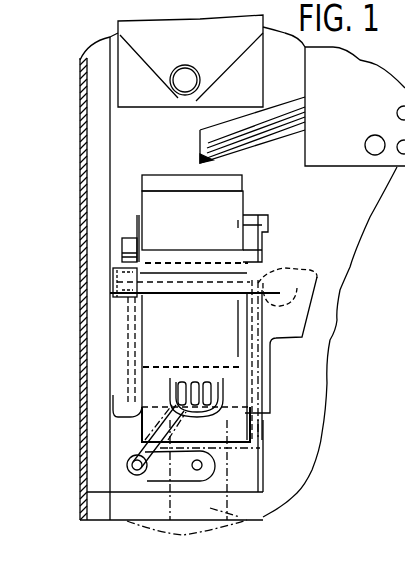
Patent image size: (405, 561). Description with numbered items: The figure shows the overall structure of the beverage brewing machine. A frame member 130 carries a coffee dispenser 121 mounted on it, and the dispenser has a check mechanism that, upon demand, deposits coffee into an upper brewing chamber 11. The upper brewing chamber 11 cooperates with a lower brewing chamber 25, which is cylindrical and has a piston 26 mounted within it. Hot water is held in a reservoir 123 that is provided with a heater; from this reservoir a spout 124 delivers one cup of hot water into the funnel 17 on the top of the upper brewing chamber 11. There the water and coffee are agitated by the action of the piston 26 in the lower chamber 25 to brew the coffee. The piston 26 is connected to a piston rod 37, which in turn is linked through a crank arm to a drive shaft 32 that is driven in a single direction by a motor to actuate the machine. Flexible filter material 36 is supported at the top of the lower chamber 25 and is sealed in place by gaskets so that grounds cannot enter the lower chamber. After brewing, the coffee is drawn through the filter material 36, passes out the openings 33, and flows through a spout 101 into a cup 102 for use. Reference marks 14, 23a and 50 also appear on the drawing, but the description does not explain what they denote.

The upper brewing chamber 11 is at (222, 212).
The frame 14 is at (397, 295).
The funnel 17 is at (158, 177).
The pivot pin 23a is at (182, 79).
The lower brewing chamber 25 is at (237, 352).
The piston 26 is at (243, 388).
The drive shaft 32 is at (205, 465).
The openings 33 is at (177, 394).
The filter material 36 is at (113, 492).
The piston rod 37 is at (138, 452).
The support shelf 50 is at (143, 287).
The spout 101 is at (220, 413).
The cup 102 is at (230, 518).
The coffee dispenser 121 is at (143, 55).
The reservoir 123 is at (336, 153).
The spout 124 is at (268, 122).
The frame member 130 is at (93, 354).